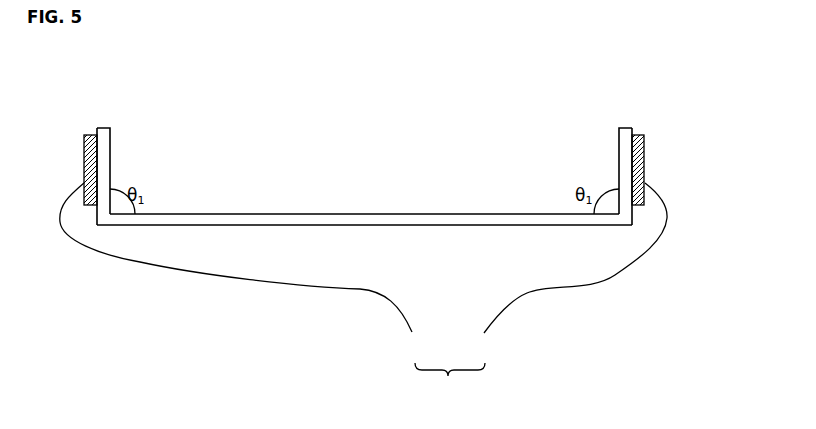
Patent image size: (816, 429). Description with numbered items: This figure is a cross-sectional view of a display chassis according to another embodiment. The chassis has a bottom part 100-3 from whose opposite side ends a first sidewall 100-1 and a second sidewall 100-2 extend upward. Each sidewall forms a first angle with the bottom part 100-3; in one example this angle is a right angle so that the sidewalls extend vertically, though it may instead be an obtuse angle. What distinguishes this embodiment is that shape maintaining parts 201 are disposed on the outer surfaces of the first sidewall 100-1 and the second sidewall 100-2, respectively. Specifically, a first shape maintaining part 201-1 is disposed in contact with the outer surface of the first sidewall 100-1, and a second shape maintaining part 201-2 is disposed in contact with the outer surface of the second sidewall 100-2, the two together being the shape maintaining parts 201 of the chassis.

The first sidewall 100-1 is at (103, 128).
The second sidewall 100-2 is at (627, 128).
The bottom part 100-3 is at (363, 219).
The first shape maintaining part 201-1 is at (248, 271).
The second shape maintaining part 201-2 is at (567, 271).
The shape maintaining parts 201 is at (450, 382).